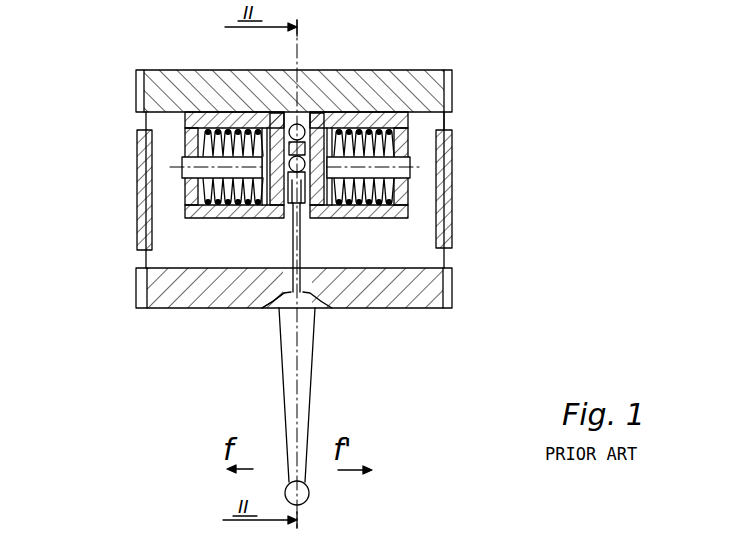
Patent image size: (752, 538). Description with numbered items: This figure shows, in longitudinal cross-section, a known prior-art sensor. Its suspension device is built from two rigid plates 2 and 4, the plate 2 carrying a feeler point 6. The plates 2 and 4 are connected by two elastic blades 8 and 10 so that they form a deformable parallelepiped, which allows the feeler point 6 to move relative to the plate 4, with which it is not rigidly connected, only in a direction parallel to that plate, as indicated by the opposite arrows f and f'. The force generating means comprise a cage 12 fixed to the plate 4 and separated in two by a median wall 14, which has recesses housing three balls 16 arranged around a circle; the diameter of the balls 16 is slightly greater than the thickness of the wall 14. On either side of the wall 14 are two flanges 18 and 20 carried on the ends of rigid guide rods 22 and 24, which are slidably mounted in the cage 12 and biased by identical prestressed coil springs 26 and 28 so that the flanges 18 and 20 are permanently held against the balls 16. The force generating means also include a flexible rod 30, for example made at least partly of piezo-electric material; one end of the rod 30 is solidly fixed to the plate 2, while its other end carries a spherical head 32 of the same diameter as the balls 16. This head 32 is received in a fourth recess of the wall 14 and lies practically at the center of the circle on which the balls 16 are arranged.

The rigid plate 2 is at (408, 290).
The rigid plate 4 is at (430, 70).
The feeler point 6 is at (303, 375).
The elastic blade 8 is at (447, 120).
The elastic blade 10 is at (146, 127).
The cage 12 is at (445, 207).
The median wall 14 is at (340, 113).
The ball 16 is at (300, 124).
The flange 18 is at (306, 205).
The flange 20 is at (278, 198).
The rigid guide rod 22 is at (412, 168).
The rigid guide rod 24 is at (188, 178).
The prestressed coil spring 26 is at (425, 245).
The prestressed coil spring 28 is at (222, 197).
The flexible rod 30 is at (275, 297).
The spherical head 32 is at (310, 210).